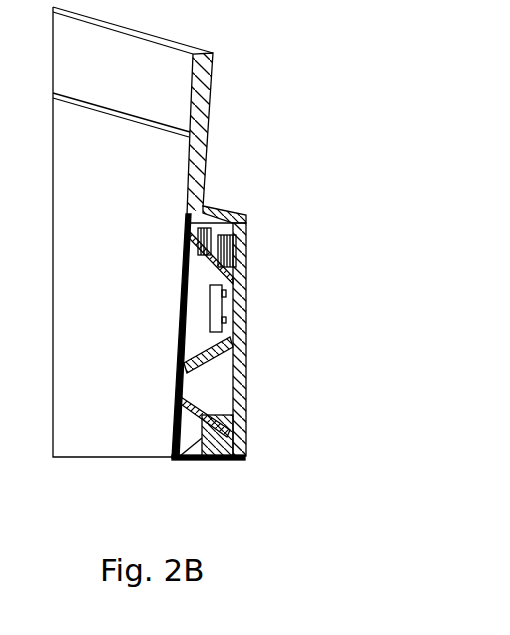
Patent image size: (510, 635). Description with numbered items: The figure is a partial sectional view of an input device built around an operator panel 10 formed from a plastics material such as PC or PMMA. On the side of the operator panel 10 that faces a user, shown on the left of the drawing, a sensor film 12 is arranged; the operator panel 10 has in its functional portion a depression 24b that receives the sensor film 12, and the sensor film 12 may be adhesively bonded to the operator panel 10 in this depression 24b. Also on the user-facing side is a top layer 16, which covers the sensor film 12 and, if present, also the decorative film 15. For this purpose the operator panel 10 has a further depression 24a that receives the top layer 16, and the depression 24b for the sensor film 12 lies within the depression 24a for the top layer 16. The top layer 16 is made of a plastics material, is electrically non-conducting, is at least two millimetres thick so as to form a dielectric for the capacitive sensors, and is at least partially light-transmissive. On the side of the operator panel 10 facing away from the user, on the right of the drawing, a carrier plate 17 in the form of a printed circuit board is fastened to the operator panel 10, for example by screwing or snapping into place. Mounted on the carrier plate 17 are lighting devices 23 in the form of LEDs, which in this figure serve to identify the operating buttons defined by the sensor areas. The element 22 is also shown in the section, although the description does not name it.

The operator panel 10 is at (205, 75).
The depression 24a is at (205, 163).
The depression 24b is at (248, 218).
The lighting devices 23 is at (223, 311).
The carrier plate 17 is at (238, 381).
The bottom block 22 is at (186, 436).
The top layer 16 is at (100, 443).
The sensor film 12 is at (173, 460).
The decorative film 15 is at (188, 371).